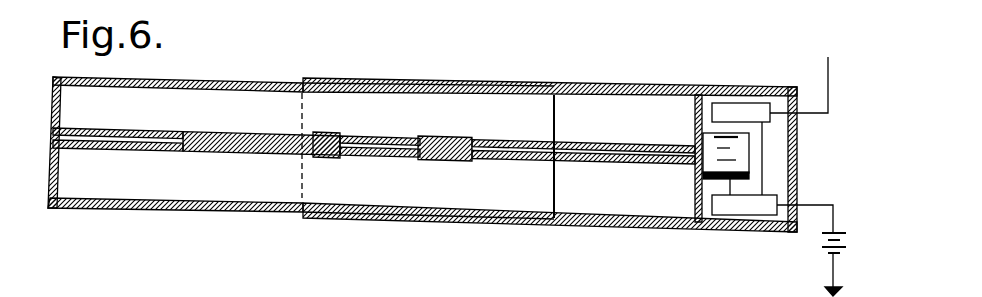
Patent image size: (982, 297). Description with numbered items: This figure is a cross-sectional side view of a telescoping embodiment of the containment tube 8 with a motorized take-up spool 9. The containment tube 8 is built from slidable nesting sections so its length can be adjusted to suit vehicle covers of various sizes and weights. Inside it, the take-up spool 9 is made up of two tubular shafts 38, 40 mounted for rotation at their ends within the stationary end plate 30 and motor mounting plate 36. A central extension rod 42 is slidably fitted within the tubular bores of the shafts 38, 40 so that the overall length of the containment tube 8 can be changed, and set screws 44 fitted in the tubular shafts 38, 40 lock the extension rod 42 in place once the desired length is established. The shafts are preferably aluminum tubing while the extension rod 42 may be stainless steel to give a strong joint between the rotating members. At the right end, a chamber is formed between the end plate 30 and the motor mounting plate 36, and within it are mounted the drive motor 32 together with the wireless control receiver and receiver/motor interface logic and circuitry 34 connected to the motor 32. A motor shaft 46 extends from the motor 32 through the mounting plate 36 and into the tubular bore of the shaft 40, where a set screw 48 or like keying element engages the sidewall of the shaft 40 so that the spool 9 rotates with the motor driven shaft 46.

The containment tube 8 is at (580, 84).
The take-up spool 9 is at (166, 130).
The end plate 30 is at (57, 172).
The drive motor 32 is at (745, 140).
The wireless control receiver and interface circuitry 34 is at (777, 182).
The motor mounting plate 36 is at (695, 207).
The tubular shaft 38 is at (279, 153).
The tubular shaft 40 is at (483, 160).
The central extension rod 42 is at (401, 141).
The set screw 44 is at (317, 134).
The motor shaft 46 is at (675, 150).
The set screw 48 is at (703, 133).